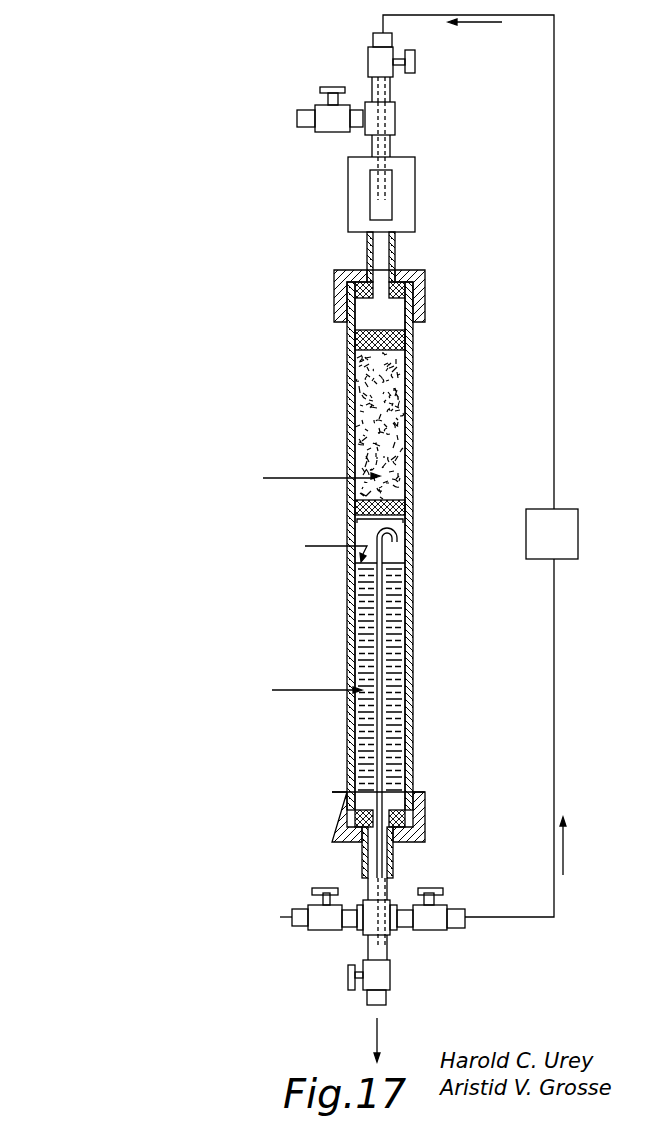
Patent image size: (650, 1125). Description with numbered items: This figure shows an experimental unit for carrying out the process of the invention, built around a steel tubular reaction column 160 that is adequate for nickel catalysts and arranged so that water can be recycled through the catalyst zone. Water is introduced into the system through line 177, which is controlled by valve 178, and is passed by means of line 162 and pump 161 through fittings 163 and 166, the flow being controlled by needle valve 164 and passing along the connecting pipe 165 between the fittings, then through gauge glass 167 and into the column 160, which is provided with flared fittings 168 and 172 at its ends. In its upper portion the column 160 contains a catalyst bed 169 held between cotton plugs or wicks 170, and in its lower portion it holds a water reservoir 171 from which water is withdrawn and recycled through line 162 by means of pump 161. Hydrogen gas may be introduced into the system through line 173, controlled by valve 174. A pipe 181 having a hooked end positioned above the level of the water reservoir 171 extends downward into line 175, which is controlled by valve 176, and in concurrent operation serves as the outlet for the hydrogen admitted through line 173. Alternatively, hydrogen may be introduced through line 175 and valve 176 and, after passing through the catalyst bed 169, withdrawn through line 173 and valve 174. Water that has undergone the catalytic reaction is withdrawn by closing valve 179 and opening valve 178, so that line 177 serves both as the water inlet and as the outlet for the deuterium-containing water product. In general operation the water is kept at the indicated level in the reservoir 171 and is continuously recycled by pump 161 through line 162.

The steel tubular reaction column 160 is at (413, 486).
The pump 161 is at (578, 523).
The line 162 is at (554, 462).
The fitting 163 is at (392, 35).
The needle valve 164 is at (415, 62).
The pipe 165 is at (390, 93).
The fitting 166 is at (395, 126).
The gauge glass 167 is at (415, 200).
The flared fitting 168 is at (425, 295).
The catalyst bed 169 is at (385, 375).
The cotton plugs or wicks 170 is at (405, 343).
The water reservoir 171 is at (393, 637).
The flared fitting 172 is at (425, 829).
The line 173 is at (305, 128).
The valve 174 is at (328, 87).
The line 175 is at (367, 997).
The valve 176 is at (348, 977).
The line 177 is at (292, 917).
The valve 178 is at (320, 888).
The valve 179 is at (435, 892).
The pipe 181 is at (380, 567).